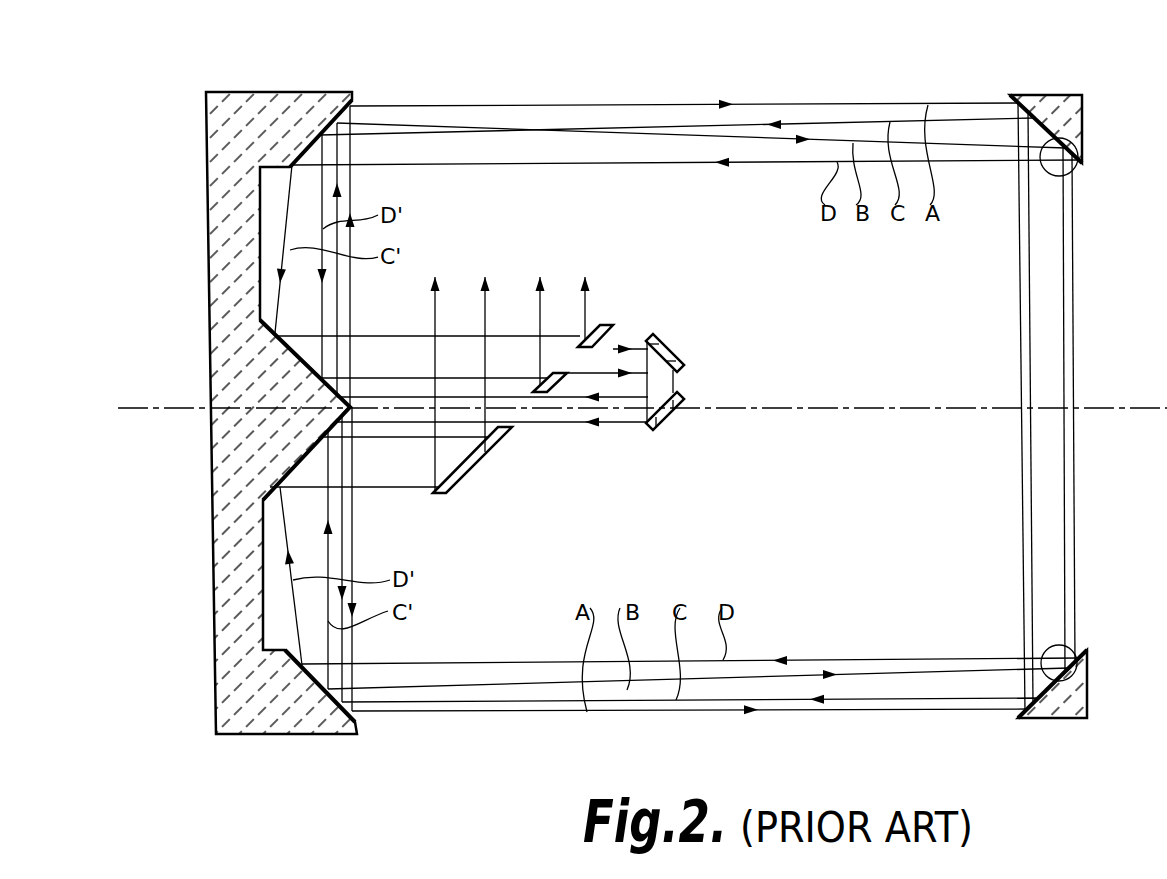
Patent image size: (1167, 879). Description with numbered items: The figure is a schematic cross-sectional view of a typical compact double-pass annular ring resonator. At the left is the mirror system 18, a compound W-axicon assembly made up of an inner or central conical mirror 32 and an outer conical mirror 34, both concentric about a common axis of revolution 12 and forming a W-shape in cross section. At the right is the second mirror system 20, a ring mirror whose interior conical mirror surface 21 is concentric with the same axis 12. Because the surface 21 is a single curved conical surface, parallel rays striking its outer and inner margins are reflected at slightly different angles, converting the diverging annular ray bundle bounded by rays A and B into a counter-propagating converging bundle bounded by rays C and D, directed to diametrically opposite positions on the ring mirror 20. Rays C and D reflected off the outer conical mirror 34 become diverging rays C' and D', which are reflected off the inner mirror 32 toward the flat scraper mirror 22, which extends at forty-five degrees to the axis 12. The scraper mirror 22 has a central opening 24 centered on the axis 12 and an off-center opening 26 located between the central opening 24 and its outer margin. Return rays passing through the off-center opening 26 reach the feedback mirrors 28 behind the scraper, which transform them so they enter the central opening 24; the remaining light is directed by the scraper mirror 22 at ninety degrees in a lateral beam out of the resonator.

The common axis of revolution 12 is at (140, 410).
The mirror system 18 is at (256, 84).
The second mirror system 20 is at (1066, 93).
The interior conical mirror surface 21 is at (1078, 163).
The scraper mirror 22 is at (497, 452).
The central opening 24 is at (513, 424).
The off-center opening 26 is at (573, 357).
The feedback mirrors 28 is at (658, 343).
The inner conical mirror 32 is at (305, 344).
The outer conical mirror 34 is at (316, 137).